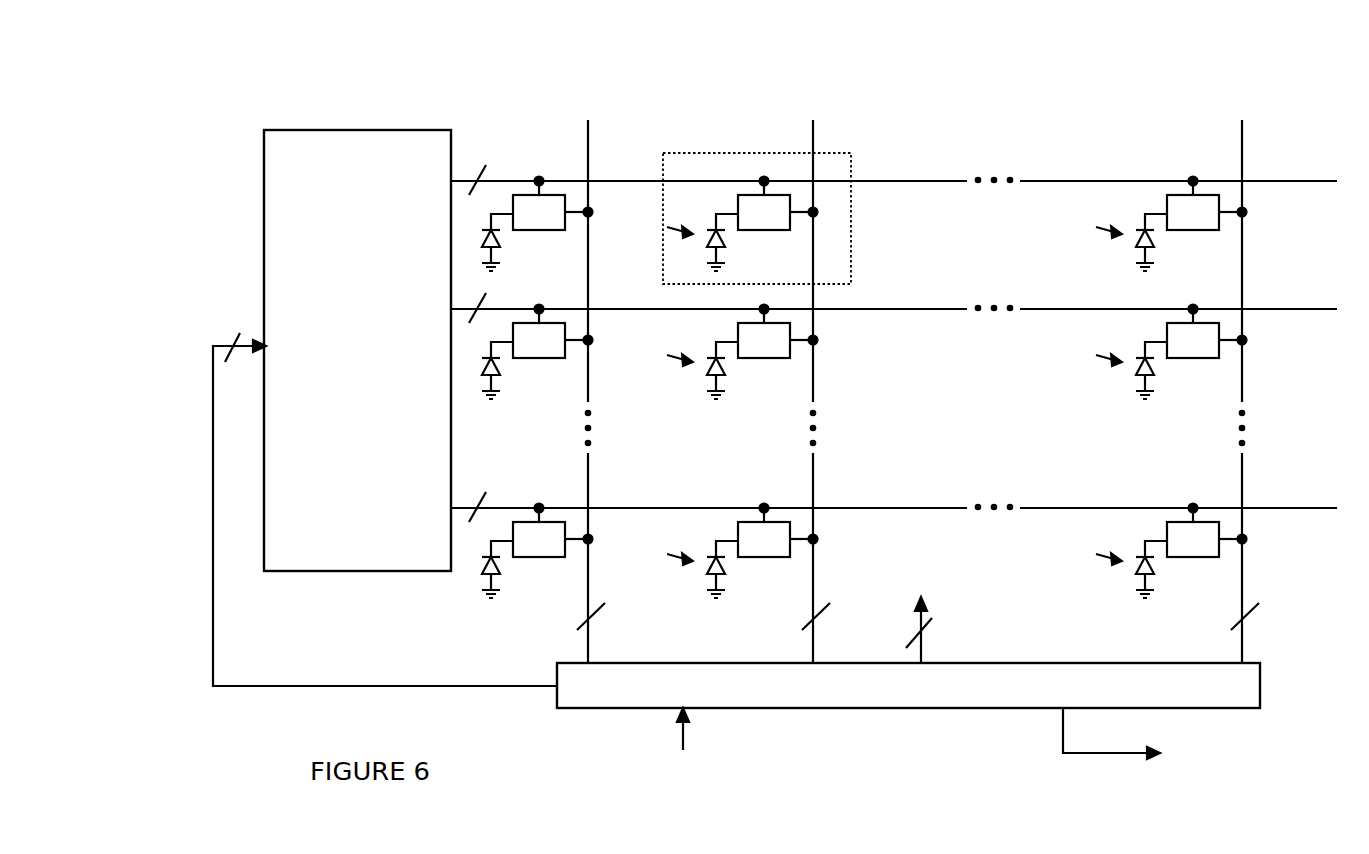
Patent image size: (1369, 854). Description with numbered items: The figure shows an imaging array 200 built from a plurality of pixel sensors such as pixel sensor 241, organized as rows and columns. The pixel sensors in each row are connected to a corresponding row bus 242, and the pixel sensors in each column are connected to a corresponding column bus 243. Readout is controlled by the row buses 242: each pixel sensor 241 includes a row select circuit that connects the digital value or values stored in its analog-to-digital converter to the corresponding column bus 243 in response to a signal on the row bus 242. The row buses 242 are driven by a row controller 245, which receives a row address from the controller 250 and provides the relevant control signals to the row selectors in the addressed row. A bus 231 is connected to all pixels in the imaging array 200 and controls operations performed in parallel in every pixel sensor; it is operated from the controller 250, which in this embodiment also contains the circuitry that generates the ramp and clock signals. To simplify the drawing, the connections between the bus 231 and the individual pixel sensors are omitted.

The imaging array 200 is at (217, 122).
The row controller 245 is at (371, 130).
The pixel sensor 241 is at (721, 152).
The row bus 242 is at (900, 179).
The column bus 243 is at (589, 486).
The bus 231 is at (924, 650).
The controller 250 is at (1109, 669).